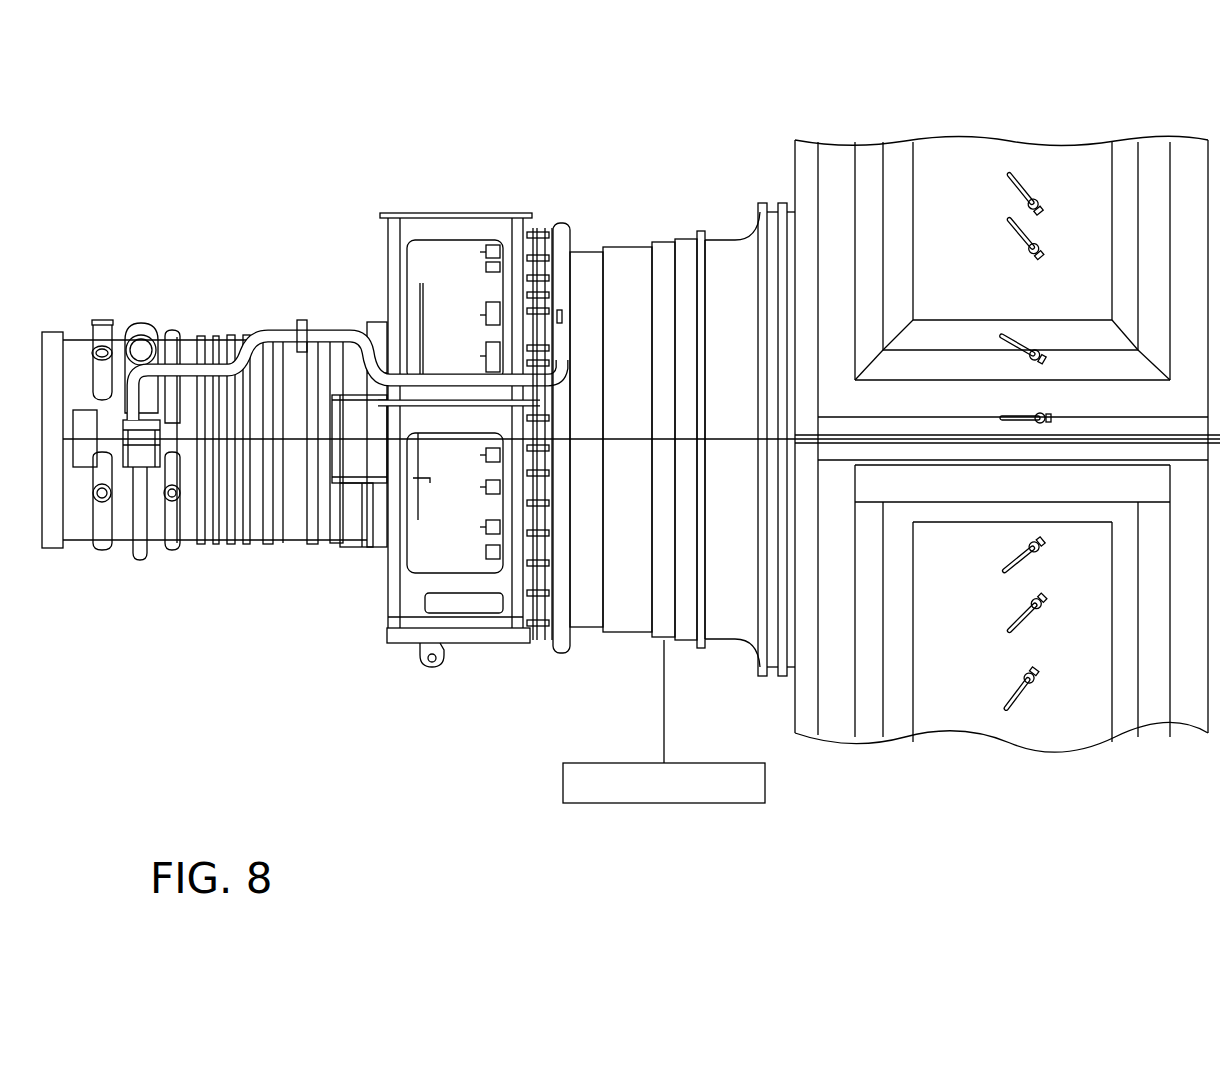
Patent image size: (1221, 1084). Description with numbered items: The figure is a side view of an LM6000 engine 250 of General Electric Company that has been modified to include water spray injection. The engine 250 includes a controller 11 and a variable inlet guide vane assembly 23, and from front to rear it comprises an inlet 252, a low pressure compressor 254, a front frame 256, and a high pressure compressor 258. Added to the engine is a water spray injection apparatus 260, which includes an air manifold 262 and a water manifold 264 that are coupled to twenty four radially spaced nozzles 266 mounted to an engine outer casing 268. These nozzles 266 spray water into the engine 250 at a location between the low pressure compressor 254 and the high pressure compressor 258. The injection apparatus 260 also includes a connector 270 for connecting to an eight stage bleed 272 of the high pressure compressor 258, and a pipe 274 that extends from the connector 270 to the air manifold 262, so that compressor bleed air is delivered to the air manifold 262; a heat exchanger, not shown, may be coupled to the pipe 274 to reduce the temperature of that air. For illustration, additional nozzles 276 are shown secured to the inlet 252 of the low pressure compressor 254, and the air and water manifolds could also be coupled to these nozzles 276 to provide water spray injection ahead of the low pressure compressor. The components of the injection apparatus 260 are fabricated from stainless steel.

The controller 11 is at (606, 763).
The variable inlet guide vane assembly 23 is at (48, 330).
The LM6000 engine 250 is at (393, 124).
The inlet 252 is at (1188, 183).
The low pressure compressor 254 is at (672, 229).
The front frame 256 is at (484, 178).
The high pressure compressor 258 is at (209, 325).
The water spray injection apparatus 260 is at (330, 258).
The air manifold 262 is at (565, 247).
The water manifold 264 is at (547, 528).
The nozzles 266 is at (486, 270).
The engine outer casing 268 is at (247, 337).
The connector 270 is at (160, 452).
The eight stage bleed 272 is at (127, 477).
The pipe 274 is at (296, 320).
The nozzles 276 is at (1010, 235).